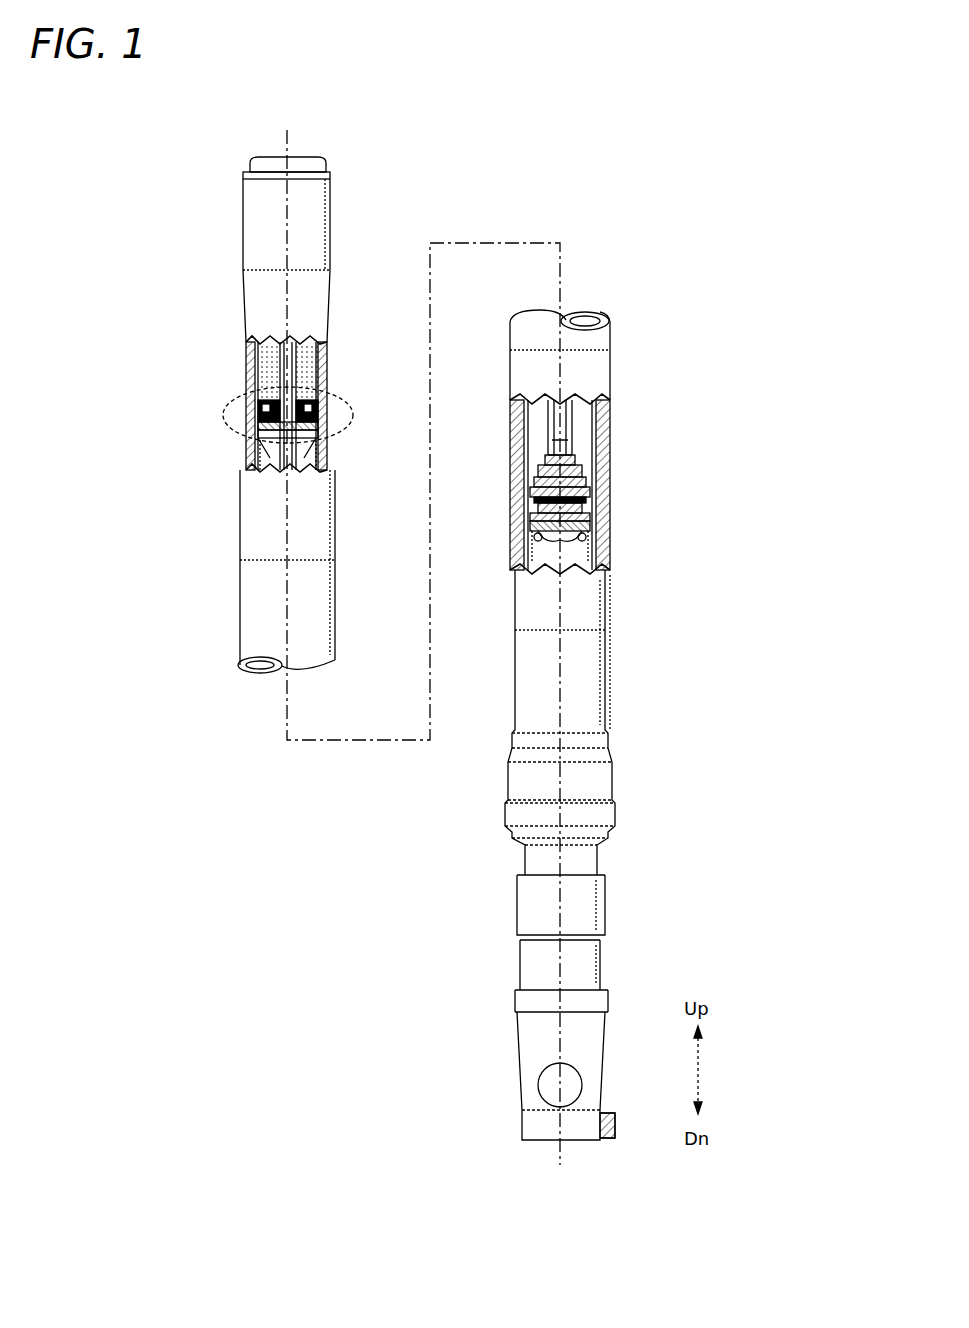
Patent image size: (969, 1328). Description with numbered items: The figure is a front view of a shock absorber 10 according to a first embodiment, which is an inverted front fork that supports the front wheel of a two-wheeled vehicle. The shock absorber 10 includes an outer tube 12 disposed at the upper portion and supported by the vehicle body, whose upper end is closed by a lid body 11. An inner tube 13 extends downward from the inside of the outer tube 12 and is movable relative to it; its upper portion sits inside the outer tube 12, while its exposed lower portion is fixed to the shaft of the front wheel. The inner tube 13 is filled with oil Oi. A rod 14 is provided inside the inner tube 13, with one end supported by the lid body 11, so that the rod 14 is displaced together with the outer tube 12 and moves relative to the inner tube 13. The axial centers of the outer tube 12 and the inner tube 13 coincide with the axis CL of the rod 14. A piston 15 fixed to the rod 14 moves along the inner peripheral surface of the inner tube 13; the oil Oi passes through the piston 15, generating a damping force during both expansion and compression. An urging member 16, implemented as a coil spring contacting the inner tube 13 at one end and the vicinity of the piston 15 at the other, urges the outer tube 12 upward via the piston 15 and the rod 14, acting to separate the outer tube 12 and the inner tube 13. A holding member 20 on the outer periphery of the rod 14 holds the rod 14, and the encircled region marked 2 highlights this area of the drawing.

The shock absorber 10 is at (655, 197).
The lid body 11 is at (305, 165).
The outer tube 12 is at (255, 613).
The inner tube 13 is at (585, 862).
The rod 14 is at (570, 415).
The piston 15 is at (590, 498).
The urging member 16 is at (595, 545).
The holding member 20 is at (258, 452).
The enlarged region of FIG. 2 is at (237, 402).
The axis CL is at (285, 150).
The oil Oi is at (320, 353).